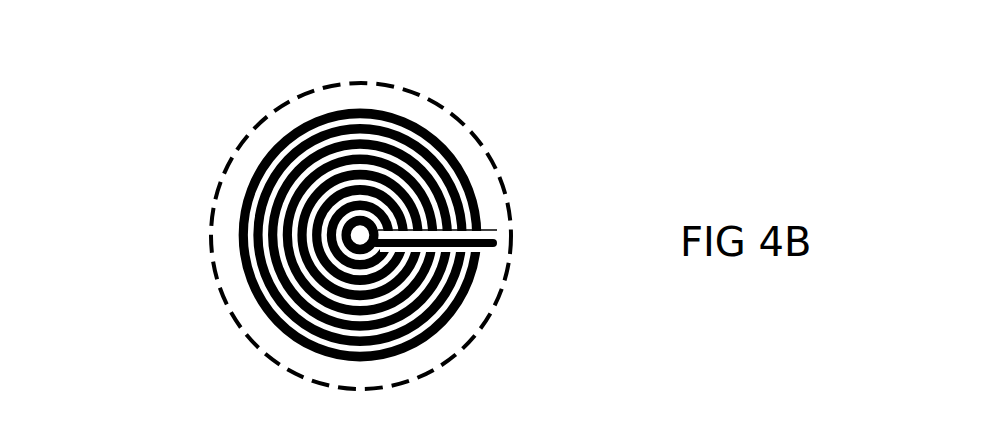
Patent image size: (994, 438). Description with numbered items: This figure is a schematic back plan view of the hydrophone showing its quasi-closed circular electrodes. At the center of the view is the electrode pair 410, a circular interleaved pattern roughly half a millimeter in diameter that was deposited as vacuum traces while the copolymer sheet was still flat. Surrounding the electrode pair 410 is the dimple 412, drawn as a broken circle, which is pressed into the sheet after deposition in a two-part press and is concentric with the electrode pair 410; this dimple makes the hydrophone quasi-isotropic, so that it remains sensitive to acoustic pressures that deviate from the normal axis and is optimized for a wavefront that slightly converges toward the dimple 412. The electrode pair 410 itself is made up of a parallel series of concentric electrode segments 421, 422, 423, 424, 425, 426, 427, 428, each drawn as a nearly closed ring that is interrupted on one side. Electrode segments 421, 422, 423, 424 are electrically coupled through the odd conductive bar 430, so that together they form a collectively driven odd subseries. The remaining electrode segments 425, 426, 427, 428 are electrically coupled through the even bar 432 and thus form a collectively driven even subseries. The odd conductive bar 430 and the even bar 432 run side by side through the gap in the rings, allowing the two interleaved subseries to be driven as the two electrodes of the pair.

The electrode pair 410 is at (263, 126).
The dimple 412 is at (246, 142).
The electrode segment 421 is at (350, 218).
The electrode segment 422 is at (333, 216).
The electrode segment 423 is at (316, 232).
The electrode segment 424 is at (300, 243).
The electrode segment 425 is at (288, 252).
The electrode segment 426 is at (273, 270).
The electrode segment 427 is at (265, 281).
The electrode segment 428 is at (256, 296).
The odd conductive bar 430 is at (497, 230).
The even bar 432 is at (494, 248).